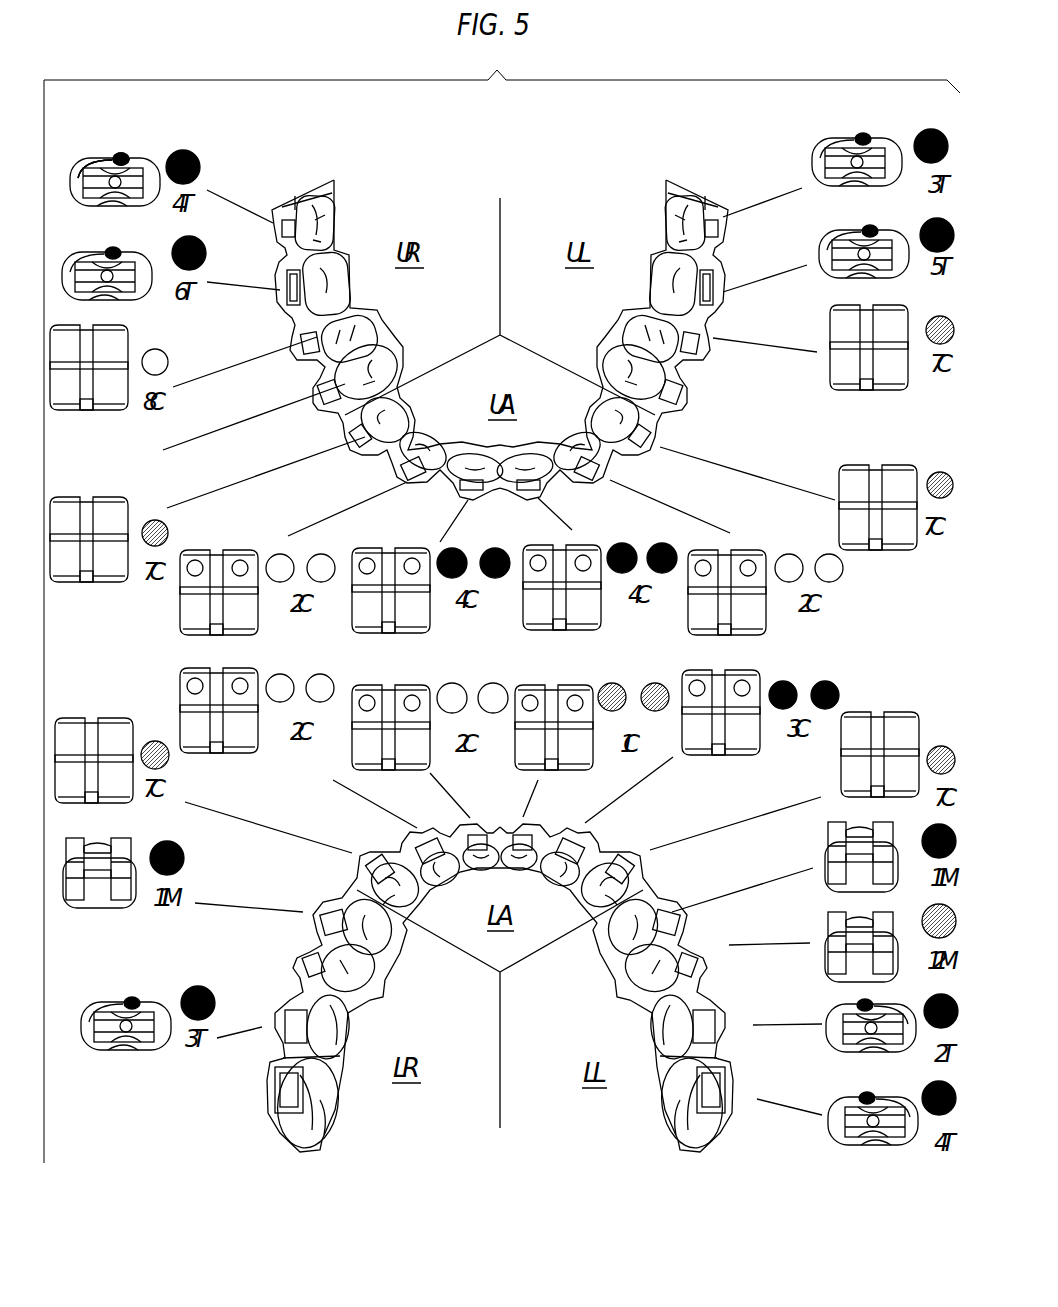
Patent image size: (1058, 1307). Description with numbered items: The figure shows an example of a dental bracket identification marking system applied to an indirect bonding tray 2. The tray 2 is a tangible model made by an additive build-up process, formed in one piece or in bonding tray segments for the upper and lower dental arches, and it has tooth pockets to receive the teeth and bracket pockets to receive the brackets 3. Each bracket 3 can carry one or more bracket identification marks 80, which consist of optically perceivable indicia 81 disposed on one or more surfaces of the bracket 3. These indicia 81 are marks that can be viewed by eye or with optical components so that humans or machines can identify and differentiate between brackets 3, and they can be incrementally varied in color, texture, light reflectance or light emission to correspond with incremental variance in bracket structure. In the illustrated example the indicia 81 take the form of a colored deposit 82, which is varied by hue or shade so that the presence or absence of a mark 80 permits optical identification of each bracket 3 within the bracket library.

The indirect bonding tray 2 is at (700, 181).
The bracket 3 is at (76, 196).
The bracket identification mark 80 is at (121, 155).
The optically perceivable indicia 81 is at (108, 137).
The colored deposit 82 is at (198, 158).